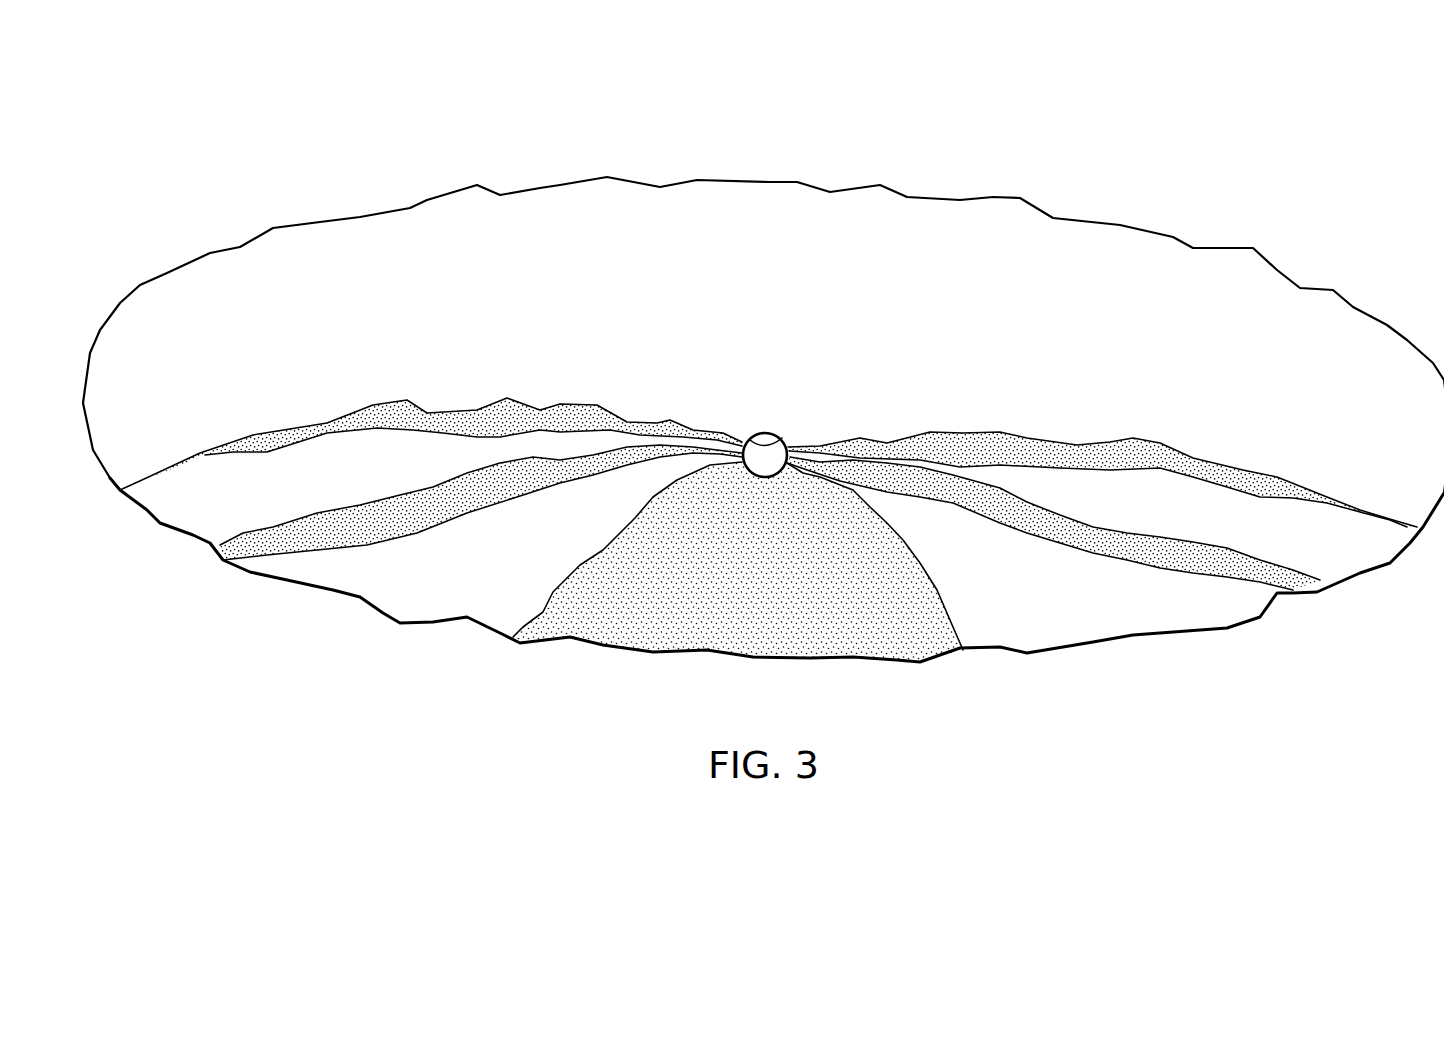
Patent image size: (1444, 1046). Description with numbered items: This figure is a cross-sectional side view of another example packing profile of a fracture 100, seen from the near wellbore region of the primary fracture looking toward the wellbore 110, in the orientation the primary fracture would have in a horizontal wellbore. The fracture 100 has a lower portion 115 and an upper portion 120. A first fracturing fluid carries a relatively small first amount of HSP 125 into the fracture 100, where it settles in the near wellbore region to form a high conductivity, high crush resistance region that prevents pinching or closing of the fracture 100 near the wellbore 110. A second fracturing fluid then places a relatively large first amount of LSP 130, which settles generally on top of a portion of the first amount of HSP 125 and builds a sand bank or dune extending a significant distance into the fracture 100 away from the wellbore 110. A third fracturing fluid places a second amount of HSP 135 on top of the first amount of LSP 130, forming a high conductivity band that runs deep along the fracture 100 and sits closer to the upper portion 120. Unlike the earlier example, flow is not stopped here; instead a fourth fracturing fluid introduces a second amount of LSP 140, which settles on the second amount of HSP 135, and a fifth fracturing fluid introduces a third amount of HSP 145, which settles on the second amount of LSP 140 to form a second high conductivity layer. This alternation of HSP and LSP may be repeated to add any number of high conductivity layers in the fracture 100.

The fracture 100 is at (1020, 197).
The wellbore 110 is at (778, 433).
The lower portion of the fracture 115 is at (574, 689).
The upper portion of the fracture 120 is at (573, 108).
The first amount of HSP 125 is at (892, 657).
The first amount of LSP 130 is at (412, 623).
The second amount of HSP 135 is at (220, 552).
The second amount of LSP 140 is at (150, 510).
The third amount of HSP 145 is at (400, 410).